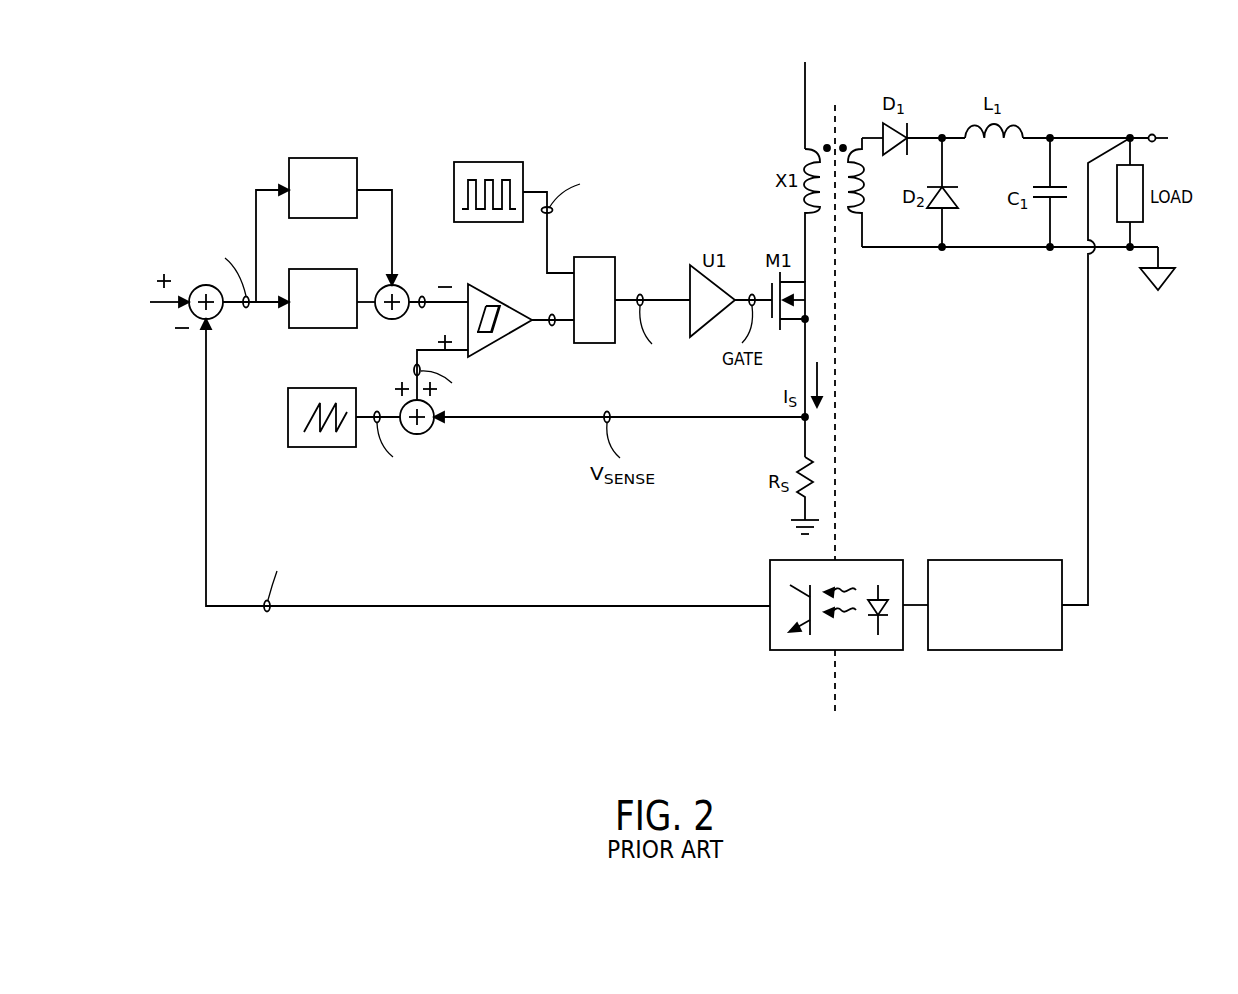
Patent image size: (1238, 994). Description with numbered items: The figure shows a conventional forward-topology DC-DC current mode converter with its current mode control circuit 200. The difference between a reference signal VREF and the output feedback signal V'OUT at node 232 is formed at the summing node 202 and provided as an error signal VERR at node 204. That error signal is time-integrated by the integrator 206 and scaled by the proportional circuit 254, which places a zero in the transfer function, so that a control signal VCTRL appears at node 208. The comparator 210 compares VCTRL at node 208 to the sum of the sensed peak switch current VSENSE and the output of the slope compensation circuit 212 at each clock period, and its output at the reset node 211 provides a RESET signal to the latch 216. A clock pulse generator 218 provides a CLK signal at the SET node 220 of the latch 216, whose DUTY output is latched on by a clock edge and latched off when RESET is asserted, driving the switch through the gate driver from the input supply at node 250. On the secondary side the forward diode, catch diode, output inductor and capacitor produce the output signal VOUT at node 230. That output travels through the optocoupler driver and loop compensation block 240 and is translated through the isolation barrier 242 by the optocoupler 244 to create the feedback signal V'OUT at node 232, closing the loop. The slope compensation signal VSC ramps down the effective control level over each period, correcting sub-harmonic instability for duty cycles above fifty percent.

The current mode control circuit 200 is at (163, 111).
The error summing node 202 is at (162, 305).
The error signal node 204 is at (255, 310).
The integrator 206 is at (357, 318).
The control signal node 208 is at (424, 296).
The comparator 210 is at (516, 332).
The reset node 211 is at (552, 326).
The slope compensation circuit 212 is at (322, 447).
The latch 216 is at (616, 272).
The clock pulse generator 218 is at (525, 167).
The SET node 220 is at (550, 227).
The output signal node 230 is at (1153, 134).
The output feedback signal node 232 is at (418, 608).
The optocoupler driver and loop compensation block 240 is at (990, 652).
The isolation barrier 242 is at (835, 673).
The optocoupler 244 is at (770, 625).
The input voltage node 250 is at (805, 74).
The scaling circuit 254 is at (358, 174).